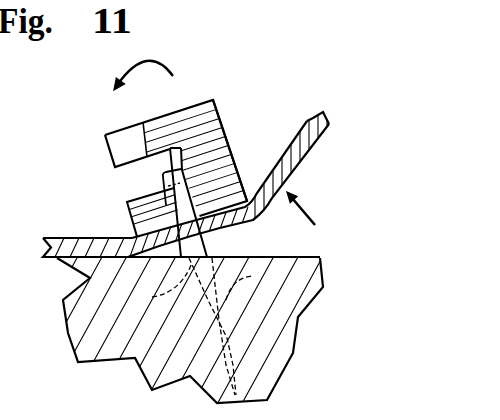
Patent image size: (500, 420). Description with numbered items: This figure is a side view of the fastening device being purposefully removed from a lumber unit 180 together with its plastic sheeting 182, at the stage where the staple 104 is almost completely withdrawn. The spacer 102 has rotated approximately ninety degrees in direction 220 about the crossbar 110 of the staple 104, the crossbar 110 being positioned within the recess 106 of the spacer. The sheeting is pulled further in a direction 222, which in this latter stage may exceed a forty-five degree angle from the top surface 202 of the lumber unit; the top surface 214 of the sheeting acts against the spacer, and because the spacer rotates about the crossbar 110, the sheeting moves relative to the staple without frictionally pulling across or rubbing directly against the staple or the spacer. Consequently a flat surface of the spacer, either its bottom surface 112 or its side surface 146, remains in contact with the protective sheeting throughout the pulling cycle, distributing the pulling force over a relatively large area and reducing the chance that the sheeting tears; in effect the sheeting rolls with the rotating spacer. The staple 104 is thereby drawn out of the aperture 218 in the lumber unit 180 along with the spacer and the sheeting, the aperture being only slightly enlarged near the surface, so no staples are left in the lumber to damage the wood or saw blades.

The spacer 102 is at (190, 98).
The staple 104 is at (151, 286).
The recess 106 is at (143, 160).
The crossbar 110 is at (166, 171).
The bottom surface 112 is at (222, 134).
The side surface 146 is at (121, 130).
The lumber unit 180 is at (272, 324).
The plastic sheeting 182 is at (318, 138).
The top surface 202 is at (309, 257).
The top surface 214 is at (80, 237).
The aperture 218 is at (257, 277).
The direction 220 is at (160, 58).
The direction 222 is at (303, 211).